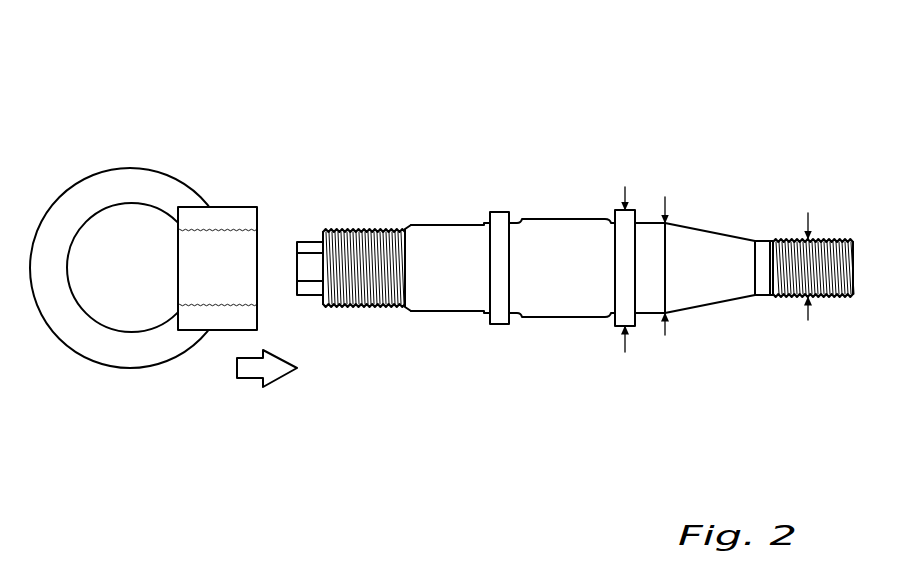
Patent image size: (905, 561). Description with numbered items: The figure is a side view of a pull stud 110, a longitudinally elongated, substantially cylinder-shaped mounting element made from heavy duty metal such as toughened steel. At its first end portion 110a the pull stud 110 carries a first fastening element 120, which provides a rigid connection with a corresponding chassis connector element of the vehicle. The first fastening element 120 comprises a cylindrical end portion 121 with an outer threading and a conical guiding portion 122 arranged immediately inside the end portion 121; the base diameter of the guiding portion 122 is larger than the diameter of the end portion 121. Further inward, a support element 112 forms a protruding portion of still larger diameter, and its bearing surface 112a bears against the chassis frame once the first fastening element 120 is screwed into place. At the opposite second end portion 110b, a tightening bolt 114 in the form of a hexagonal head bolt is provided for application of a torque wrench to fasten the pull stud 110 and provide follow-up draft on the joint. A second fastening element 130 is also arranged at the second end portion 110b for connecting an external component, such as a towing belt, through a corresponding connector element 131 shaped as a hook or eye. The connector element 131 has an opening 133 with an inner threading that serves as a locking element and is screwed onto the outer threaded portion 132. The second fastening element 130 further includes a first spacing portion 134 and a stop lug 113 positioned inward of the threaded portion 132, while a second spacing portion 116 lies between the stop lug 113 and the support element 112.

The pull stud 110 is at (305, 117).
The first end portion 110a is at (813, 257).
The second end portion 110b is at (358, 228).
The support element 112 is at (620, 240).
The bearing surface 112a is at (634, 232).
The stop lug 113 is at (498, 232).
The tightening bolt 114 is at (310, 268).
The second spacing portion 116 is at (570, 240).
The first fastening element 120 is at (783, 233).
The cylindrical end portion 121 is at (833, 268).
The conical guiding portion 122 is at (705, 252).
The second fastening element 130 is at (384, 221).
The connector element 131 is at (137, 190).
The threaded portion 132 is at (355, 285).
The opening 133 is at (225, 255).
The first spacing portion 134 is at (452, 238).